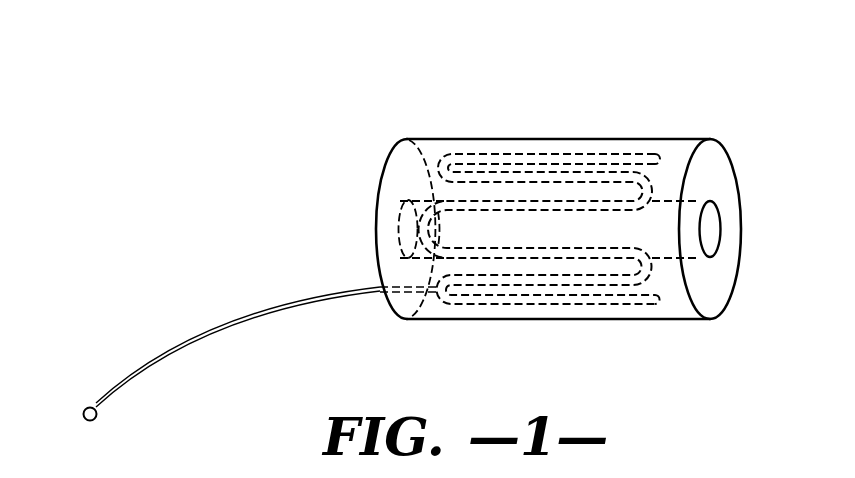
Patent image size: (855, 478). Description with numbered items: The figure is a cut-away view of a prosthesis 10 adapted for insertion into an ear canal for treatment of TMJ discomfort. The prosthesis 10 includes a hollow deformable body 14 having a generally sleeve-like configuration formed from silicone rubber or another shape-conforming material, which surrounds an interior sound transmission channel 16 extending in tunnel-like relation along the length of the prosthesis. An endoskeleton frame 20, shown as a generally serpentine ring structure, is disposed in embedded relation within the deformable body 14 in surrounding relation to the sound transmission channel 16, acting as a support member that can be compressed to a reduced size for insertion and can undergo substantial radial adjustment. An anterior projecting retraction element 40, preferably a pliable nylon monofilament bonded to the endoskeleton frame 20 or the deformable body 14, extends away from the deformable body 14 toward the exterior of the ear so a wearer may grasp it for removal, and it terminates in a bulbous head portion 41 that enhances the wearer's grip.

The prosthesis 10 is at (590, 167).
The deformable body 14 is at (604, 138).
The sound transmission channel 16 is at (708, 228).
The endoskeleton frame 20 is at (495, 153).
The retraction element 40 is at (240, 315).
The bulbous head portion 41 is at (87, 407).